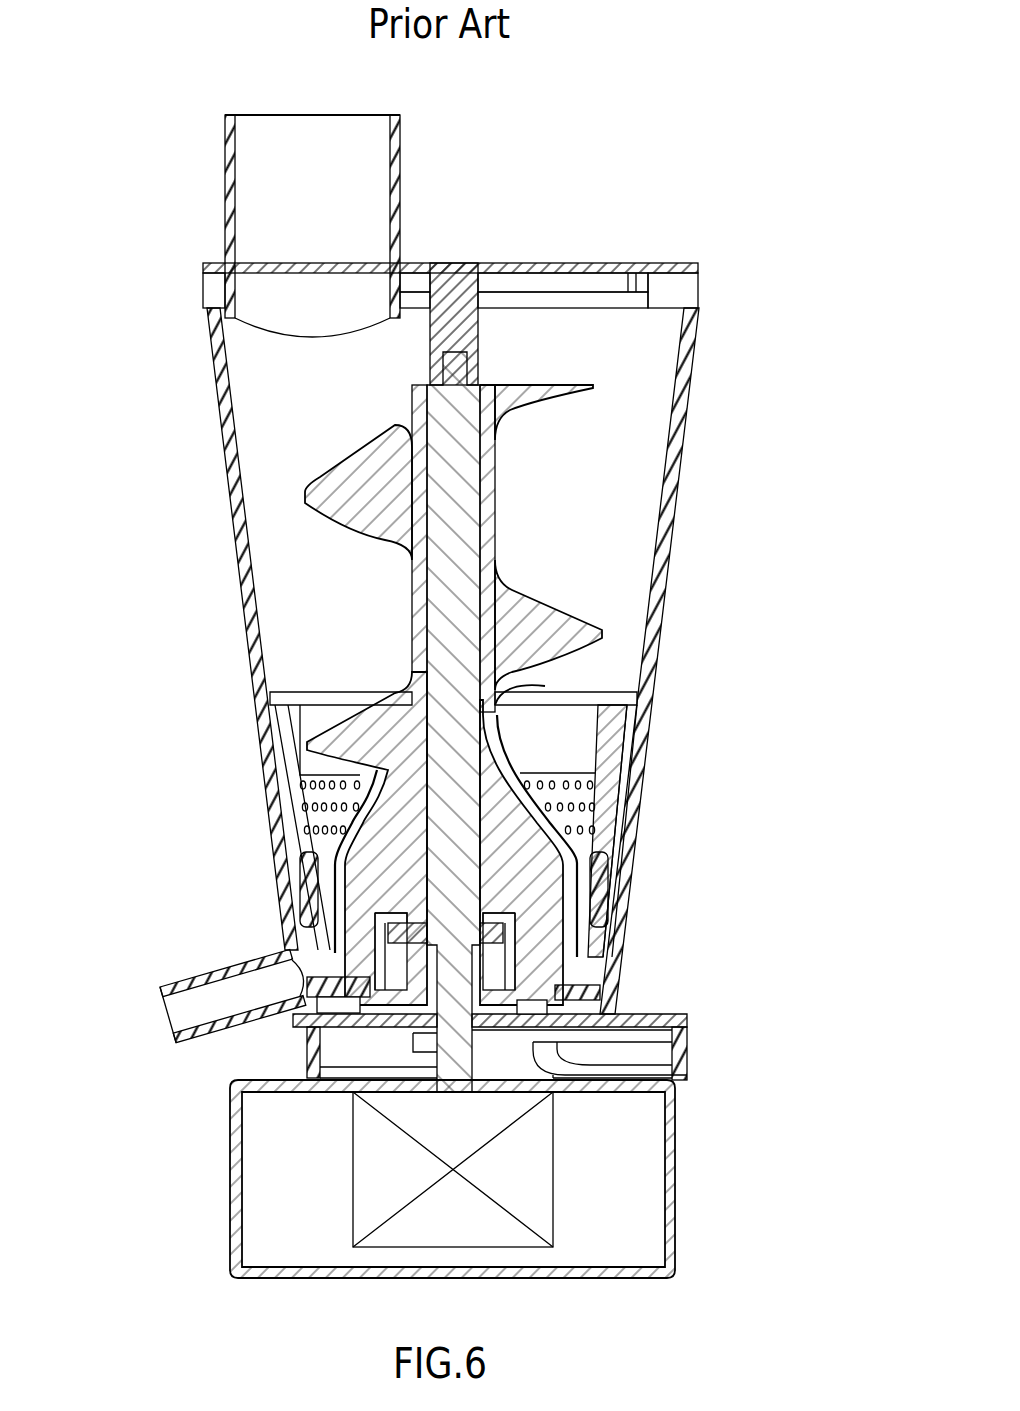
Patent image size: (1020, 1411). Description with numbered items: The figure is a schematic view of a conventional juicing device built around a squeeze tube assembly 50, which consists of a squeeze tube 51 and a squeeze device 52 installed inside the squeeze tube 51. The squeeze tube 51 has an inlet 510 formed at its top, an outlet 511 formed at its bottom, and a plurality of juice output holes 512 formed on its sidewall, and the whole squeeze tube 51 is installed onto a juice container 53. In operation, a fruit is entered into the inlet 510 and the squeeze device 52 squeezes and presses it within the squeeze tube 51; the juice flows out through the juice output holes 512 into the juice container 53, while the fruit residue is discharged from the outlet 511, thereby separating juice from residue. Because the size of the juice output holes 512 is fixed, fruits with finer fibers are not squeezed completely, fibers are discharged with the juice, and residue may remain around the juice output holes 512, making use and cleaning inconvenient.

The squeeze tube assembly 50 is at (744, 326).
The squeeze tube 51 is at (663, 518).
The inlet 510 is at (300, 145).
The outlet 511 is at (183, 1022).
The juice output holes 512 is at (313, 827).
The squeeze device 52 is at (563, 613).
The juice container 53 is at (235, 1155).